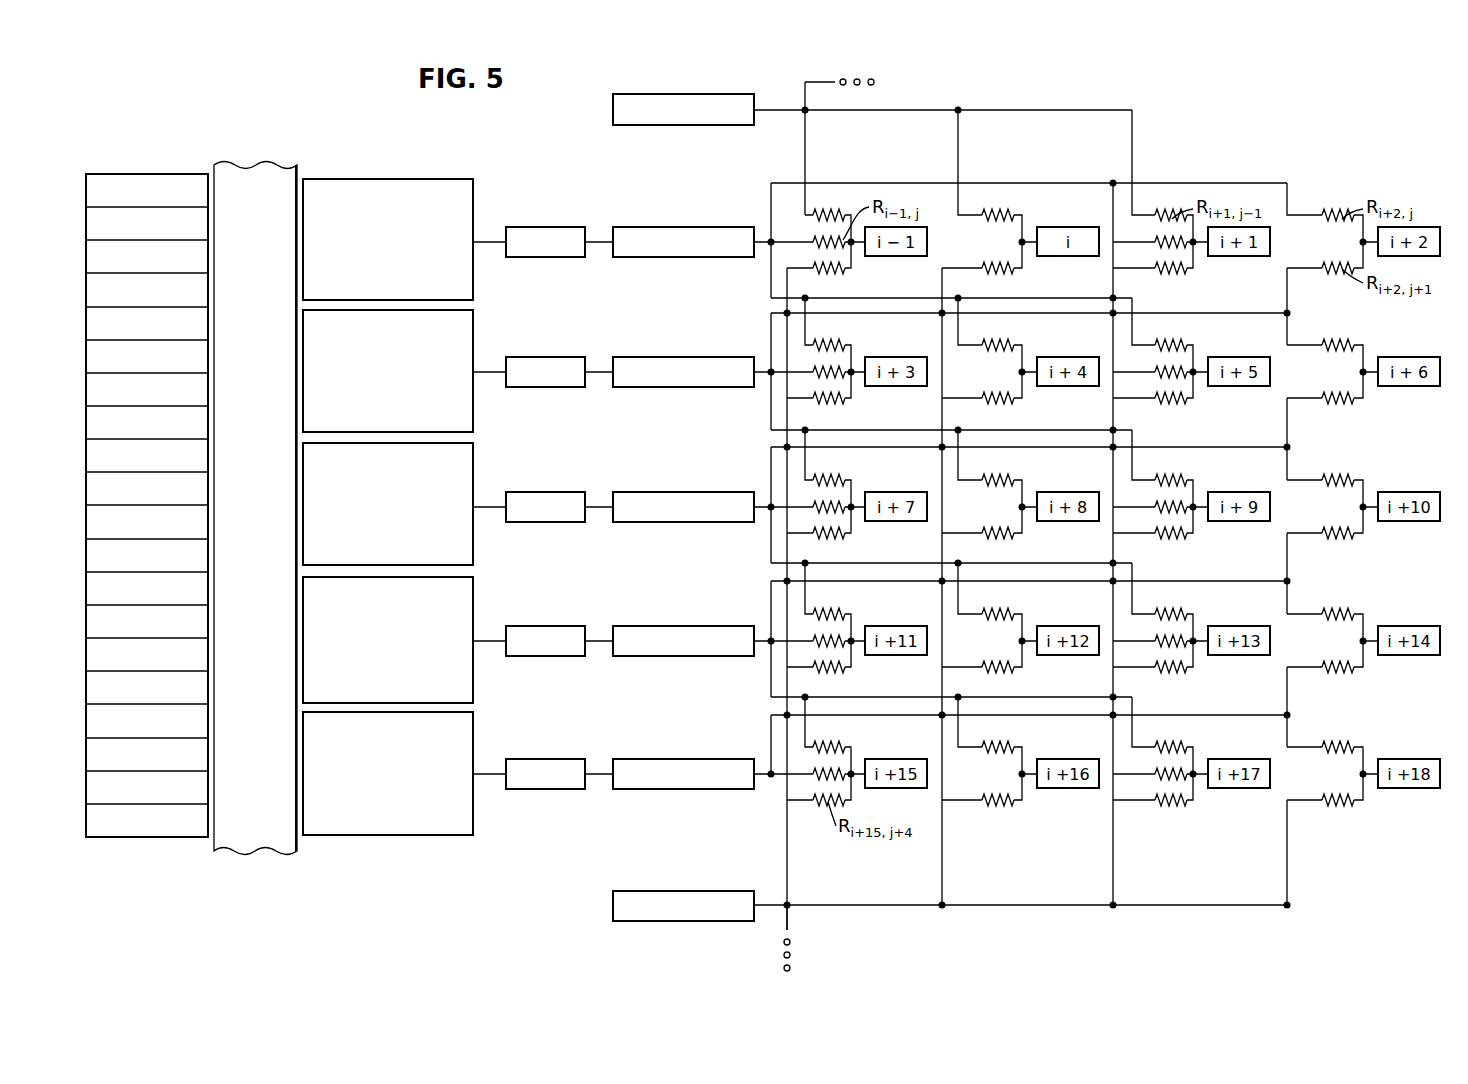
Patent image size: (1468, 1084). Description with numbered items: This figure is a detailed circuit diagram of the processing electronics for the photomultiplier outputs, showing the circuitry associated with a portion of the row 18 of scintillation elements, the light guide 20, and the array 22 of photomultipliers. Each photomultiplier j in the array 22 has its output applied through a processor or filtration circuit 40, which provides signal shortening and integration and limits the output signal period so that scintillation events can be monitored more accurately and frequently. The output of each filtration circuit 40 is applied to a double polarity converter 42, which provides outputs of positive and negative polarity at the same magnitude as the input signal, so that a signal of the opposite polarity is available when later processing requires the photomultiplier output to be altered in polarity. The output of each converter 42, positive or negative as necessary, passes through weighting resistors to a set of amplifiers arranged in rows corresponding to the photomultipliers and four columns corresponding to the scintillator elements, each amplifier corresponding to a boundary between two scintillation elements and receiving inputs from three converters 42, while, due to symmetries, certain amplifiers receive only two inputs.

The row 18 is at (126, 155).
The light guide 20 is at (243, 163).
The array of photomultipliers 22 is at (368, 161).
The processor or filtration circuit 40 is at (527, 759).
The double polarity converter 42 is at (662, 891).